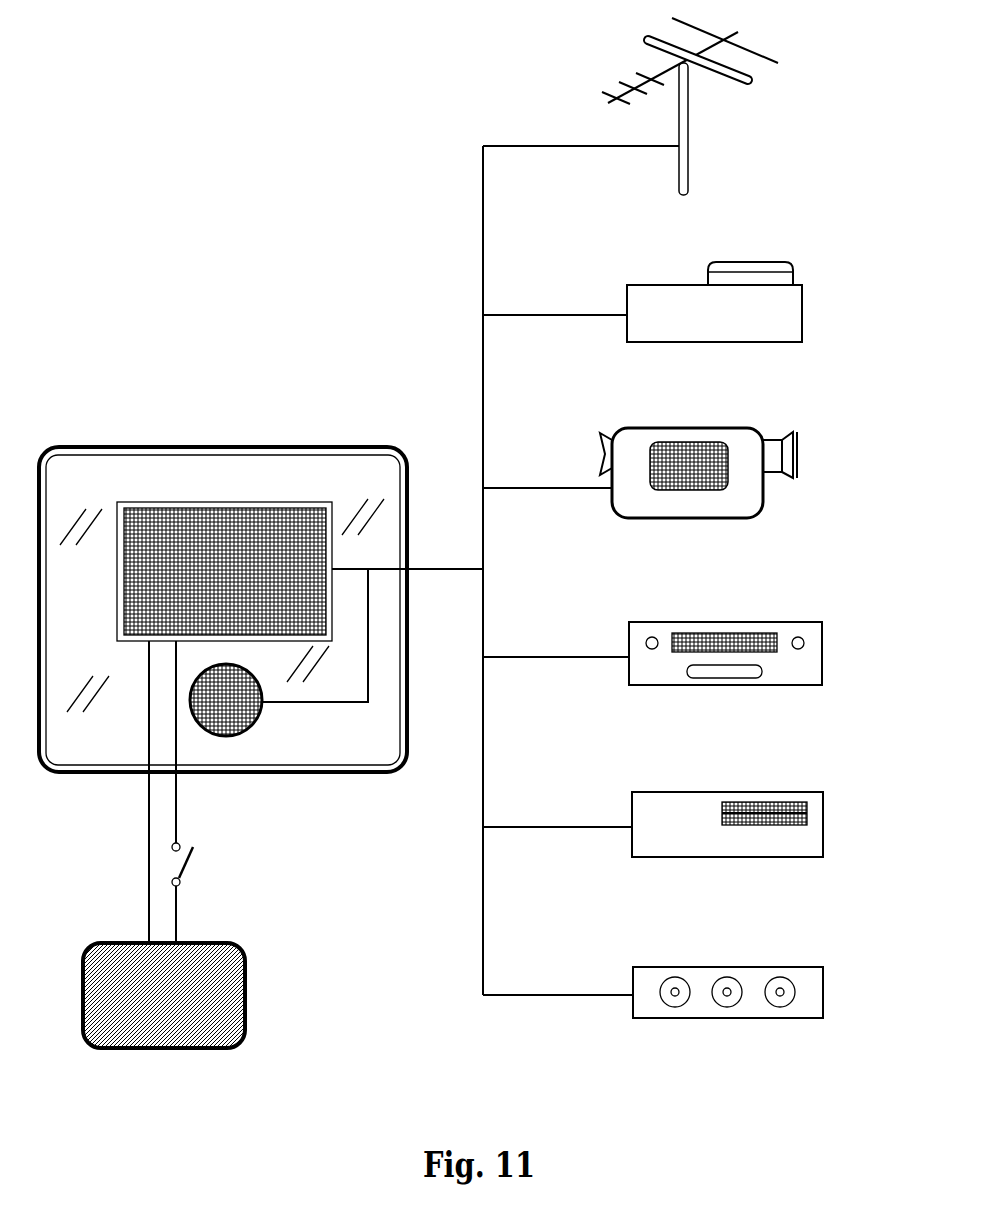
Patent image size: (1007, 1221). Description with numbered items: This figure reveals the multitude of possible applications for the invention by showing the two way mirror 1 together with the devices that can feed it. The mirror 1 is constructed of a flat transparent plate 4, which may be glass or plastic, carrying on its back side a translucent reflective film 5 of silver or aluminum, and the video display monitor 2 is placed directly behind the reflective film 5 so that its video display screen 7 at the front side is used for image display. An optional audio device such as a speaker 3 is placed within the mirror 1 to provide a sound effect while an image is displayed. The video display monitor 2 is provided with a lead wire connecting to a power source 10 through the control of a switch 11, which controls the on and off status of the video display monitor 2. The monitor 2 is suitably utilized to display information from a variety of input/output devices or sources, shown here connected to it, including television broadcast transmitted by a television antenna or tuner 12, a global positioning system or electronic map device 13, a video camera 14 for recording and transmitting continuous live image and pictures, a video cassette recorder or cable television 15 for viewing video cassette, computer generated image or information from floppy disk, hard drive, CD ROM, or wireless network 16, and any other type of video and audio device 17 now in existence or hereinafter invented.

The two way mirror 1 is at (410, 443).
The video display monitor 2 is at (132, 502).
The speaker 3 is at (226, 704).
The flat transparent plate 4 is at (280, 482).
The translucent reflective film 5 is at (352, 480).
The video display screen 7 is at (228, 532).
The power source 10 is at (165, 1000).
The switch 11 is at (202, 864).
The television antenna or tuner 12 is at (690, 155).
The global positioning system or electronic map device 13 is at (777, 317).
The video camera 14 is at (742, 477).
The video cassette recorder or cable television 15 is at (787, 663).
The wireless network 16 is at (802, 839).
The video and audio device 17 is at (805, 993).